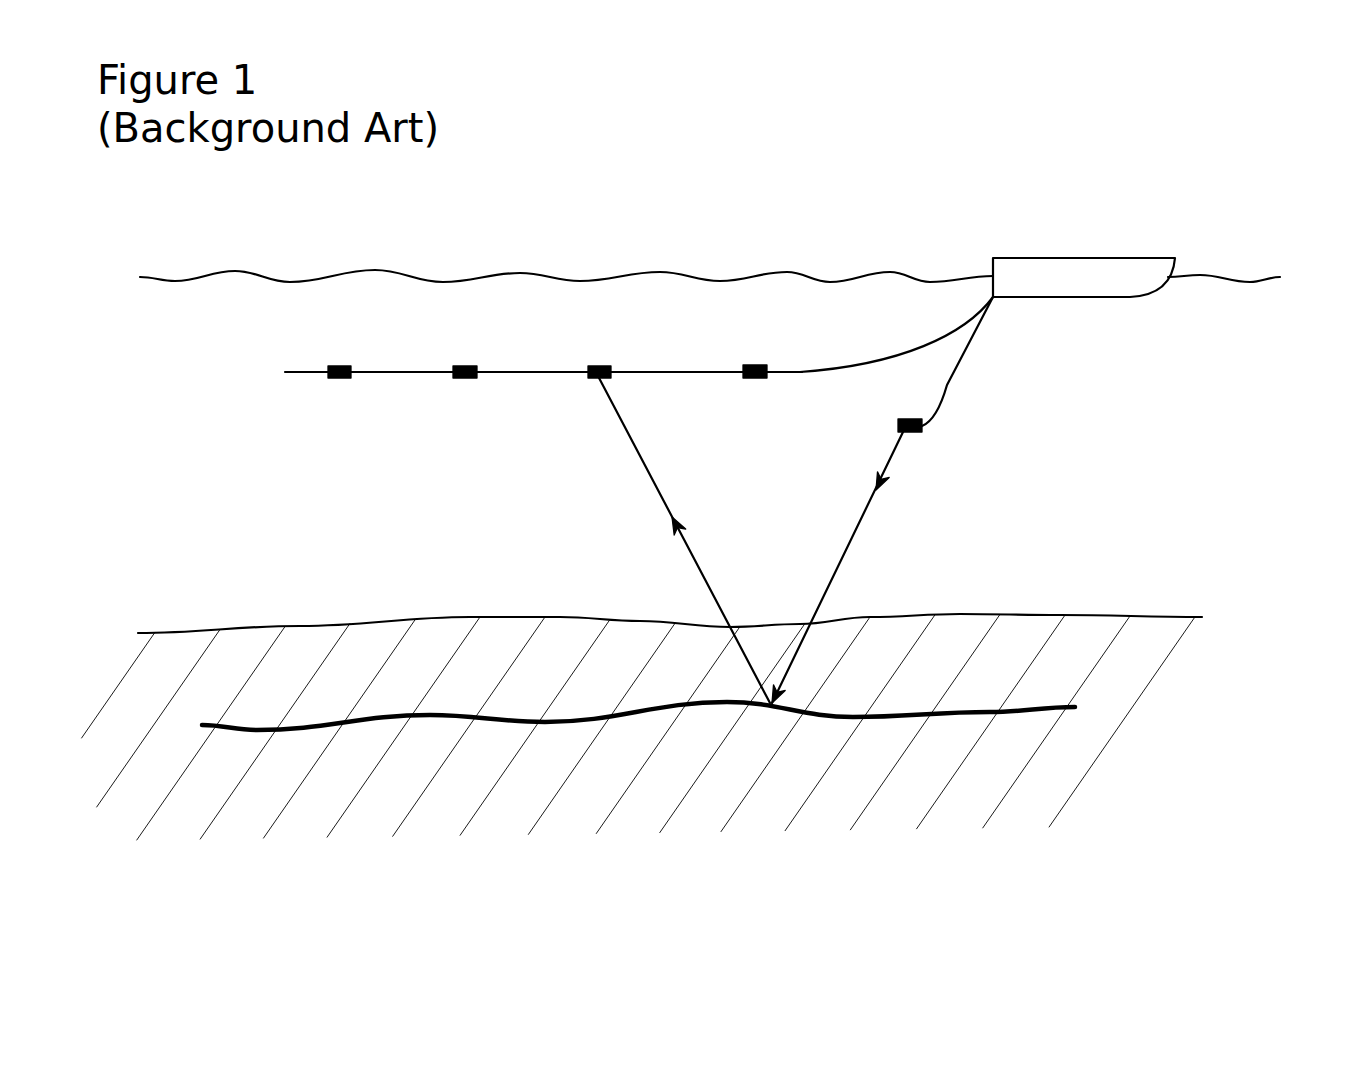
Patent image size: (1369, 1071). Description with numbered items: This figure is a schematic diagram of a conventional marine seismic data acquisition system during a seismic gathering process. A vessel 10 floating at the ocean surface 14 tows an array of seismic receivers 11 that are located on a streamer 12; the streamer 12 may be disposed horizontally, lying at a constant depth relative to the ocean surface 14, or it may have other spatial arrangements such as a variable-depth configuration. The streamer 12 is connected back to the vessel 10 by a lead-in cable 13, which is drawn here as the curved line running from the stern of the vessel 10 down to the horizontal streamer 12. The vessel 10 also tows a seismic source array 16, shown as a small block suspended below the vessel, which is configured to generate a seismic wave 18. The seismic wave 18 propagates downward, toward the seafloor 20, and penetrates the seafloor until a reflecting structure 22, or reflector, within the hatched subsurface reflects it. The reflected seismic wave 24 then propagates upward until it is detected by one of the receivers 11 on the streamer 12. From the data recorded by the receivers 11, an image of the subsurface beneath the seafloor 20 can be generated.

The vessel 10 is at (1172, 210).
The seismic receiver 11 is at (340, 379).
The streamer 12 is at (668, 373).
The lead-in cable 13 is at (927, 347).
The ocean surface 14 is at (193, 276).
The seismic source array 16 is at (920, 433).
The seismic wave 18 is at (853, 539).
The seafloor 20 is at (1075, 617).
The reflecting structure 22 is at (913, 715).
The reflected seismic wave 24 is at (640, 457).